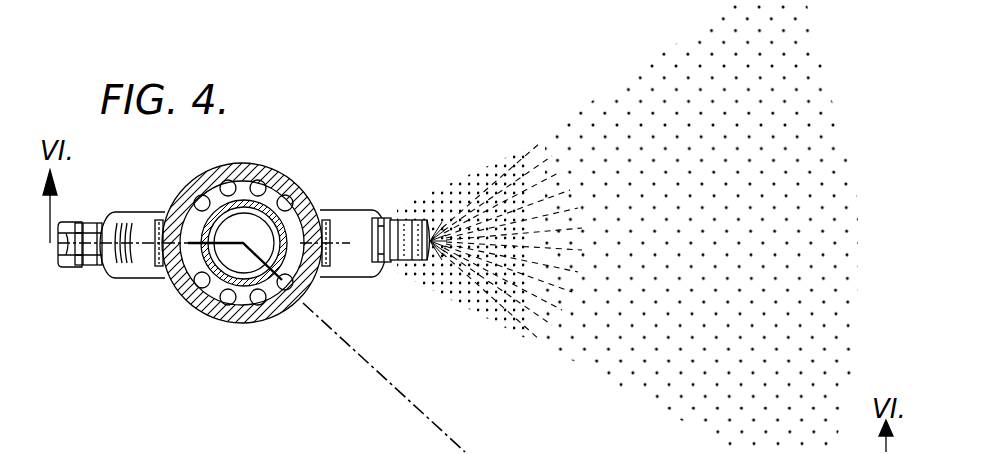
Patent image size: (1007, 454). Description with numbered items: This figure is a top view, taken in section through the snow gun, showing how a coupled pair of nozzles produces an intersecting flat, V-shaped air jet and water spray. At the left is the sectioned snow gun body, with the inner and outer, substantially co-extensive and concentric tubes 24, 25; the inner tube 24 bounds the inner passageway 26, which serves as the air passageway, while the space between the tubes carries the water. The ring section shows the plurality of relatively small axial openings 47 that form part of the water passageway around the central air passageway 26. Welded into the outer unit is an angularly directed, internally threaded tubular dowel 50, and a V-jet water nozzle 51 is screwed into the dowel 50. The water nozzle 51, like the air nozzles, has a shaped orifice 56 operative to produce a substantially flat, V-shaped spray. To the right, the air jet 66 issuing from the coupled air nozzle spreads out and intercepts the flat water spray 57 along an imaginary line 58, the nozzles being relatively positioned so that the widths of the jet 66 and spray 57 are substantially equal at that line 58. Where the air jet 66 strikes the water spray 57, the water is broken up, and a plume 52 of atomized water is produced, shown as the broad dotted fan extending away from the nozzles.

The inner tube 24 is at (284, 222).
The outer tube 25 is at (252, 320).
The inner passageway 26 is at (236, 258).
The axial openings 47 is at (260, 186).
The tubular dowel 50 is at (147, 210).
The V-jet water nozzle 51 is at (82, 222).
The plume 52 is at (675, 67).
The shaped orifice 56 is at (72, 240).
The water spray 57 is at (490, 292).
The imaginary line 58 is at (528, 137).
The air jet 66 is at (458, 173).